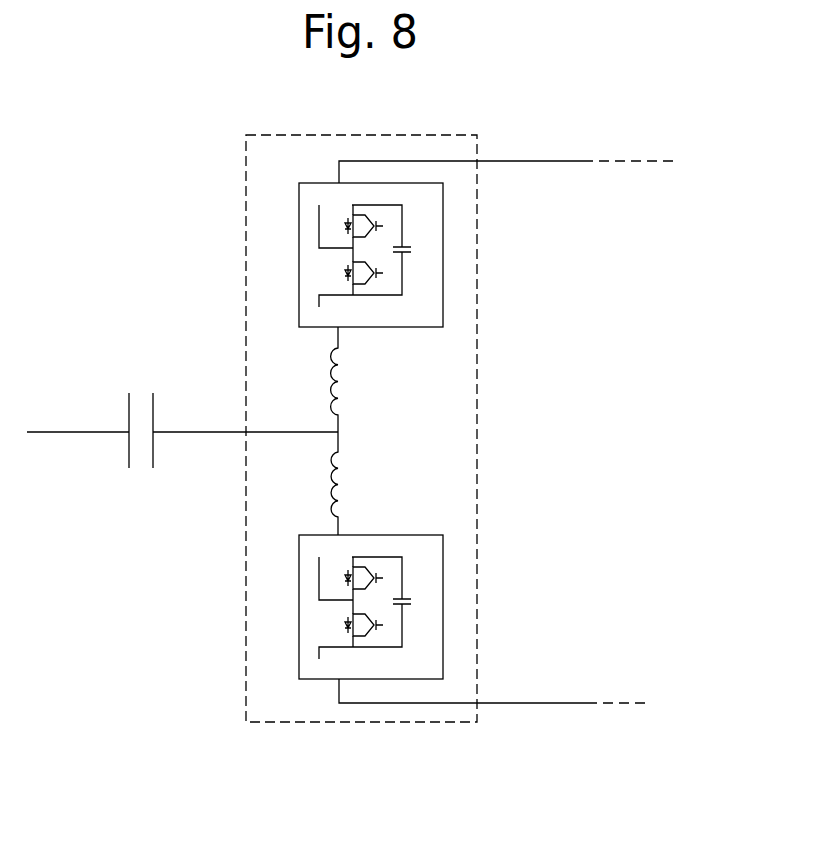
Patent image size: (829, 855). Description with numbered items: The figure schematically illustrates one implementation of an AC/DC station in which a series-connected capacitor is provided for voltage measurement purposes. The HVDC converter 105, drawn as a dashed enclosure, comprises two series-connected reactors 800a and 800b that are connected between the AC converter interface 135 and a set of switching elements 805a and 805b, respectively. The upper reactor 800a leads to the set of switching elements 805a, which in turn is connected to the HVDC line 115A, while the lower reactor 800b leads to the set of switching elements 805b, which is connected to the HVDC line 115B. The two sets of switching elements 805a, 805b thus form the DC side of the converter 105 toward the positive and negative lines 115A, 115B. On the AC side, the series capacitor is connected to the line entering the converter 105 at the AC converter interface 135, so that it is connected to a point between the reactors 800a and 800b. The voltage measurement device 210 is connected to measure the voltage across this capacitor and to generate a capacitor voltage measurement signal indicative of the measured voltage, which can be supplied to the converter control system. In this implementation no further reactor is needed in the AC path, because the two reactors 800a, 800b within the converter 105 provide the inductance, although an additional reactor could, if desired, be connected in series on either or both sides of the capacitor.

The AC/DC converter 105 is at (247, 678).
The DC line 115A is at (570, 160).
The DC line 115B is at (585, 703).
The set of switching elements 805a is at (443, 247).
The set of switching elements 805b is at (441, 610).
The reactor 800a is at (342, 378).
The reactor 800b is at (342, 481).
The voltage measurement device 210 is at (153, 407).
The AC converter interface 135 is at (244, 434).